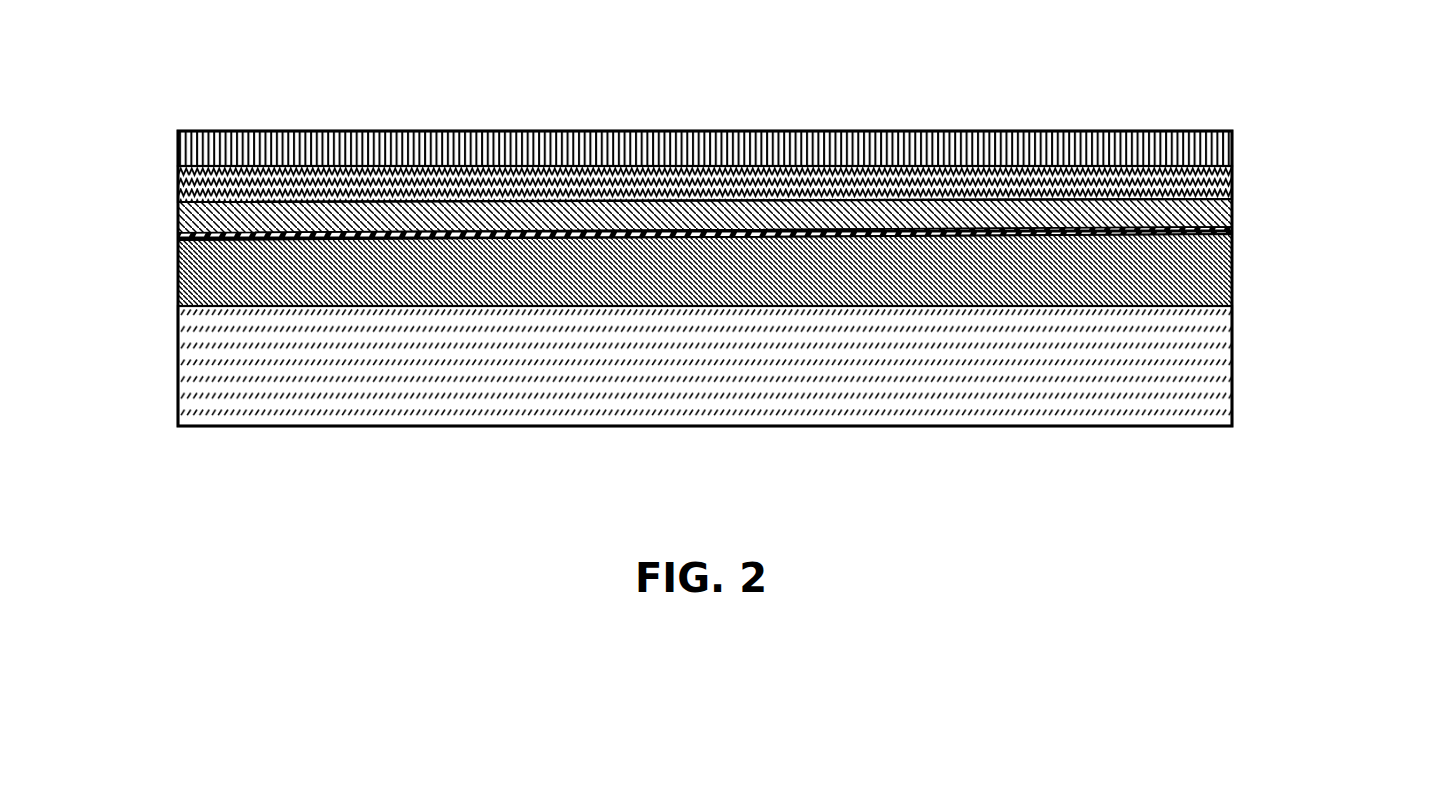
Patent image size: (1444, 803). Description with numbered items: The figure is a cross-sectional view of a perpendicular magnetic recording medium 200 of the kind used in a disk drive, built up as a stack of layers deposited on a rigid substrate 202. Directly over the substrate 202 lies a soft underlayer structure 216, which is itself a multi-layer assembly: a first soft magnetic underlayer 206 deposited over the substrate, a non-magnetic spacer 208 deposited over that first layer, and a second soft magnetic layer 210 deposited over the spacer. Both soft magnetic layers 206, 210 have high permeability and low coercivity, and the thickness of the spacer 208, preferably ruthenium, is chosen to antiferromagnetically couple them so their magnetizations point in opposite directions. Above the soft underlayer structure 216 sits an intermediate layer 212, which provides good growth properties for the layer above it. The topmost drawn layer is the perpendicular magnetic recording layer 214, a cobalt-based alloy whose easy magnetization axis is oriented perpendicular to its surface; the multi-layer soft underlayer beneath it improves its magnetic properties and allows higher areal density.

The magnetic recording medium 200 is at (712, 122).
The rigid substrate 202 is at (722, 426).
The first soft magnetic underlayer 206 is at (1232, 268).
The non-magnetic spacer 208 is at (1232, 232).
The second soft magnetic layer 210 is at (1232, 208).
The intermediate layer 212 is at (1232, 172).
The perpendicular magnetic recording layer 214 is at (1232, 150).
The soft underlayer structure 216 is at (751, 281).